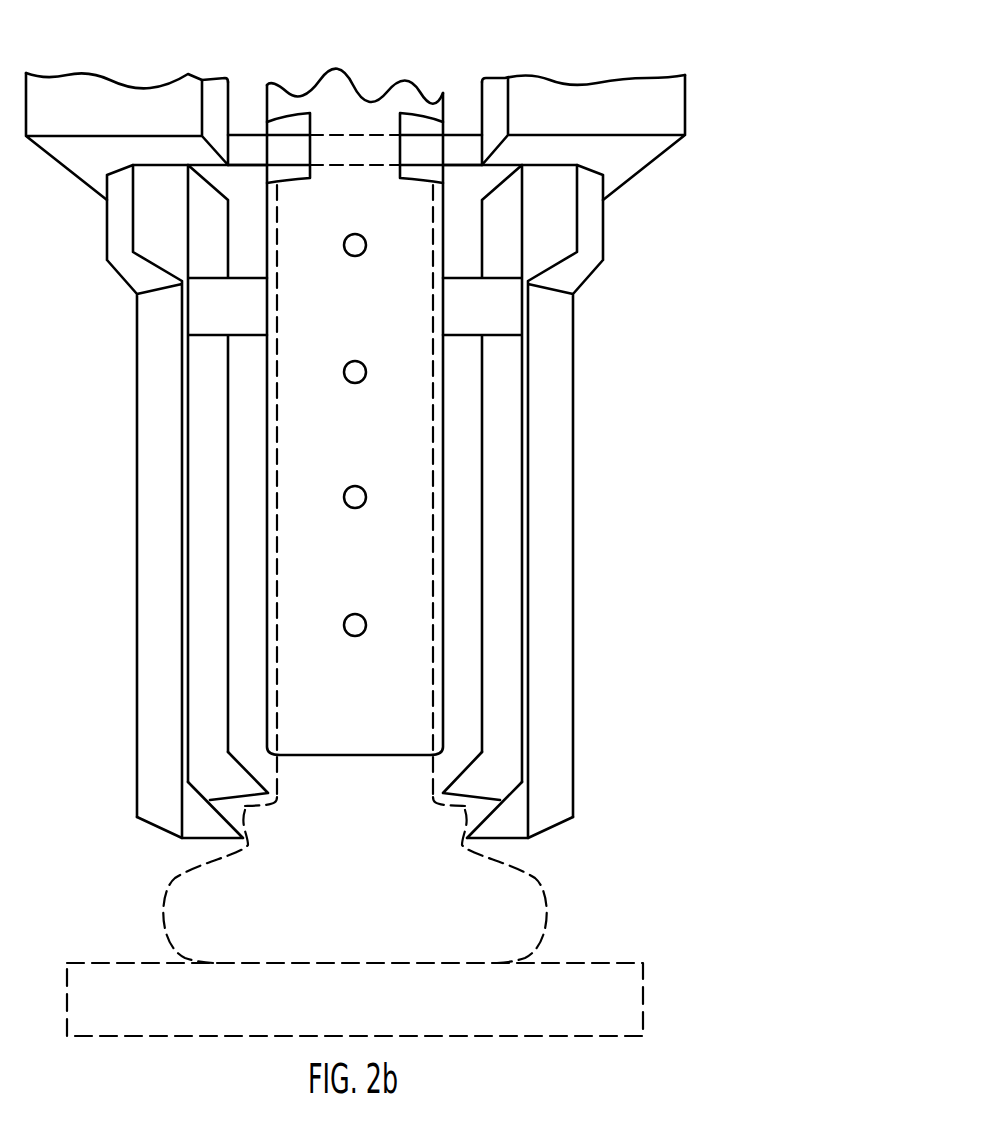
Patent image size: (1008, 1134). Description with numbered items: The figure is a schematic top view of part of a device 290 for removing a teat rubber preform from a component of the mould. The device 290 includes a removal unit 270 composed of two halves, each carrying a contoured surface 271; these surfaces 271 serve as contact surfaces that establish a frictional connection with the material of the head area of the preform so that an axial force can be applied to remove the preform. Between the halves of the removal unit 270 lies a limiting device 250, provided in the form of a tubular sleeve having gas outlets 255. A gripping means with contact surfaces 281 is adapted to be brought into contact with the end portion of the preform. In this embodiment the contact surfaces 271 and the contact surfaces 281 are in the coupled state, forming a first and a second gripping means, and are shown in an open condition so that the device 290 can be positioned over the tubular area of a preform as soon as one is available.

The limiting device 250 is at (375, 742).
The gas outlets 255 is at (366, 622).
The removal unit 270 is at (596, 576).
The contoured surface 271 is at (507, 828).
The contact surfaces 281 is at (426, 143).
The device 290 is at (604, 52).